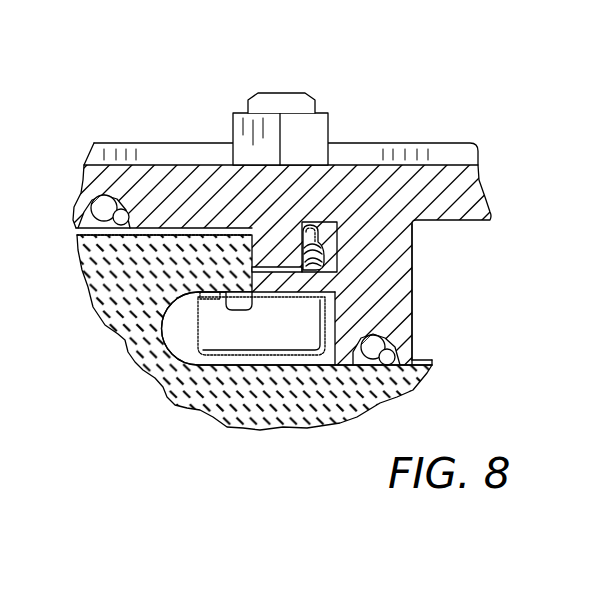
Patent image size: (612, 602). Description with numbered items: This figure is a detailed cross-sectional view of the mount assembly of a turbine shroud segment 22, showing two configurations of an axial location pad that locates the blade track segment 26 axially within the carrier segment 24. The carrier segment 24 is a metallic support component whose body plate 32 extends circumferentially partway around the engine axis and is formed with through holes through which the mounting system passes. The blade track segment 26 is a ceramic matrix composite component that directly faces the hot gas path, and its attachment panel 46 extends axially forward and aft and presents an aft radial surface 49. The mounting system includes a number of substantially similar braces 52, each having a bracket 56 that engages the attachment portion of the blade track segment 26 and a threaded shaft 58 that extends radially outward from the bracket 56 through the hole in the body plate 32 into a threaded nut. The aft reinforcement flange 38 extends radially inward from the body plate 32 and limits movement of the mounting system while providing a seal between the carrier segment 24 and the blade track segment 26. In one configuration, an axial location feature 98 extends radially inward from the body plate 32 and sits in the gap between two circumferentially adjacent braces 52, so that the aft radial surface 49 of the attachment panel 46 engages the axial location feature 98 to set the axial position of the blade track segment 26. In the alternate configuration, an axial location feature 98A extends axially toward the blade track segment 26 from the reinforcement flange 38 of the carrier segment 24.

The turbine shroud segment 22 is at (140, 90).
The carrier segment 24 is at (383, 148).
The blade track segment 26 is at (374, 406).
The body plate 32 is at (227, 163).
The aft reinforcement flange 38 is at (430, 301).
The attachment panel 46 is at (212, 255).
The aft radial surface 49 is at (253, 241).
The brace 52 is at (175, 333).
The bracket 56 is at (230, 331).
The threaded shaft 58 is at (279, 93).
The axial location feature 98 is at (300, 254).
The axial location feature 98A is at (308, 280).